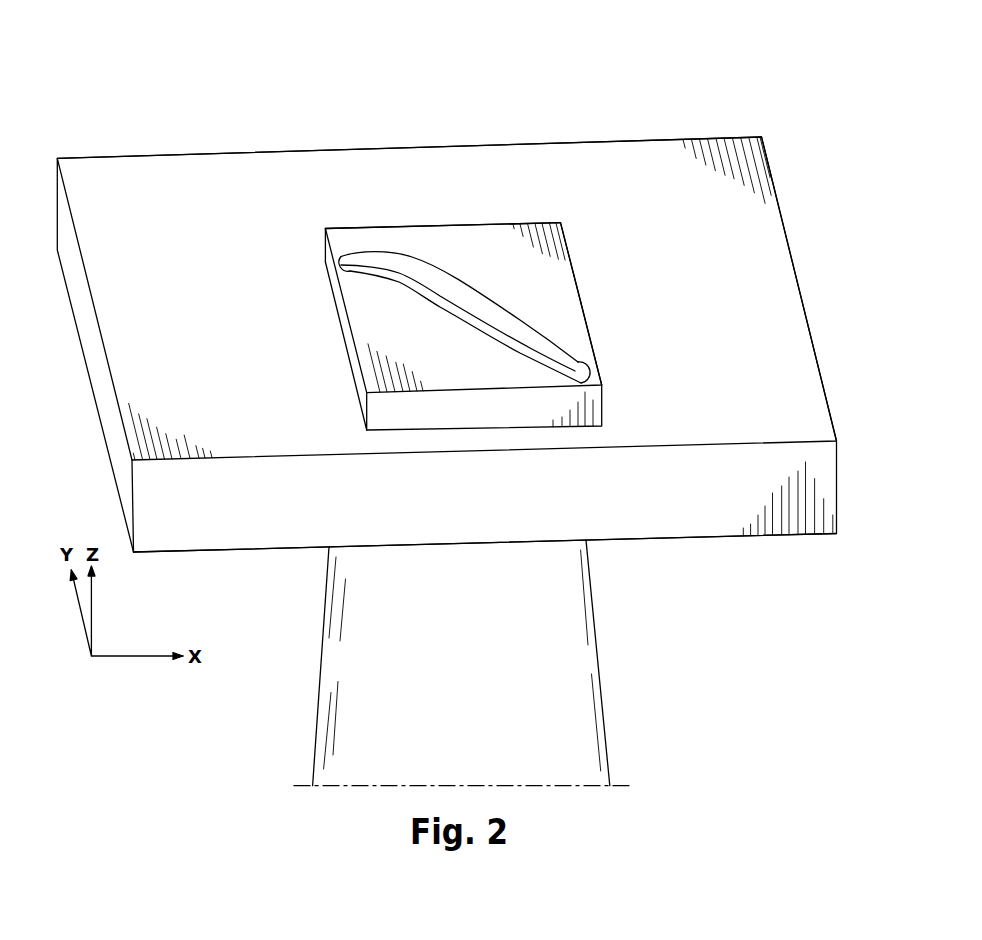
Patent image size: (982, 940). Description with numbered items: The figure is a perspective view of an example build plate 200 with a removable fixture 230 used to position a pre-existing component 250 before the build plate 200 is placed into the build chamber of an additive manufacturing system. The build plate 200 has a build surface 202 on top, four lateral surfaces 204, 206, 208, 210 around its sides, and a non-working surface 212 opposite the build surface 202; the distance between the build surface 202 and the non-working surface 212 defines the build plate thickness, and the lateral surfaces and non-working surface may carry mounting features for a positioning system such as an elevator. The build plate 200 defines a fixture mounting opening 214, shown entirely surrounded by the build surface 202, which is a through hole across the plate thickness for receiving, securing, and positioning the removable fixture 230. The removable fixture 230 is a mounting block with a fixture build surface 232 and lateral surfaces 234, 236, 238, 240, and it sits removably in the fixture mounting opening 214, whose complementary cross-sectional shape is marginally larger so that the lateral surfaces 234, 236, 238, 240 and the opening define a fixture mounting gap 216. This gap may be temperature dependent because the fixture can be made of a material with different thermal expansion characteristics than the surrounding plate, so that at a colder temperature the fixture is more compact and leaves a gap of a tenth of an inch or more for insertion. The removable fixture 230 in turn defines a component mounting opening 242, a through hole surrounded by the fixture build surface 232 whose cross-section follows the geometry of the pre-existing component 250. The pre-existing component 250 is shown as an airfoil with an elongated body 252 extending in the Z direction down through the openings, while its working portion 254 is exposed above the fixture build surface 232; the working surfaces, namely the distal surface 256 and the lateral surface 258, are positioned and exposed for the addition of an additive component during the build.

The build plate 200 is at (446, 406).
The build surface 202 is at (272, 181).
The lateral surface 204 is at (216, 528).
The lateral surface 206 is at (798, 271).
The lateral surface 208 is at (592, 141).
The lateral surface 210 is at (86, 324).
The non-working surface 212 is at (657, 541).
The fixture mounting opening 214 is at (333, 311).
The fixture mounting gap 216 is at (360, 417).
The removable fixture 230 is at (570, 258).
The fixture build surface 232 is at (384, 338).
The lateral surface 234 is at (588, 406).
The lateral surface 236 is at (586, 322).
The lateral surface 238 is at (506, 223).
The lateral surface 240 is at (325, 241).
The component mounting opening 242 is at (492, 335).
The pre-existing component 250 is at (580, 360).
The elongated body 252 is at (353, 692).
The working portion 254 is at (340, 257).
The distal surface 256 is at (444, 289).
The lateral surface 258 is at (433, 293).